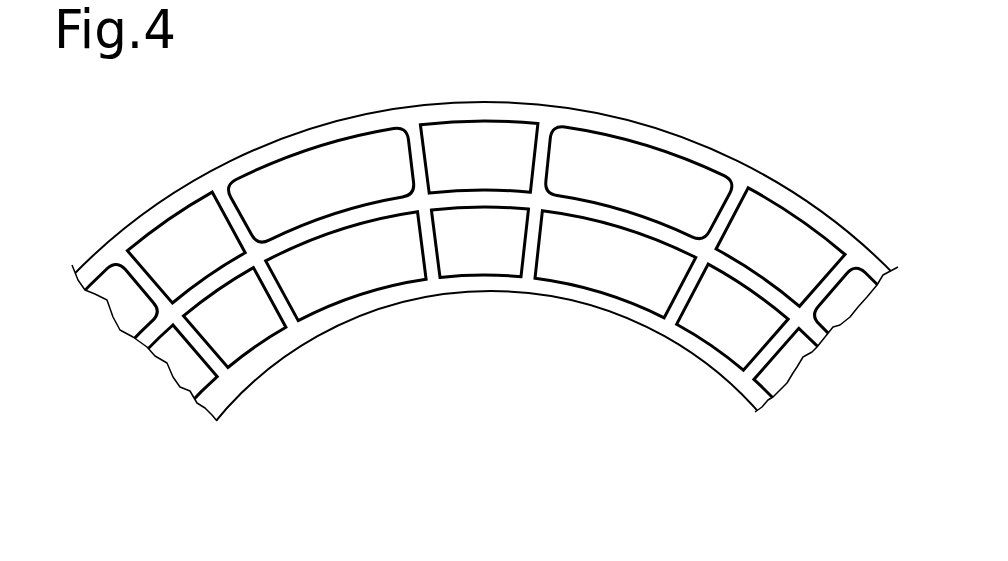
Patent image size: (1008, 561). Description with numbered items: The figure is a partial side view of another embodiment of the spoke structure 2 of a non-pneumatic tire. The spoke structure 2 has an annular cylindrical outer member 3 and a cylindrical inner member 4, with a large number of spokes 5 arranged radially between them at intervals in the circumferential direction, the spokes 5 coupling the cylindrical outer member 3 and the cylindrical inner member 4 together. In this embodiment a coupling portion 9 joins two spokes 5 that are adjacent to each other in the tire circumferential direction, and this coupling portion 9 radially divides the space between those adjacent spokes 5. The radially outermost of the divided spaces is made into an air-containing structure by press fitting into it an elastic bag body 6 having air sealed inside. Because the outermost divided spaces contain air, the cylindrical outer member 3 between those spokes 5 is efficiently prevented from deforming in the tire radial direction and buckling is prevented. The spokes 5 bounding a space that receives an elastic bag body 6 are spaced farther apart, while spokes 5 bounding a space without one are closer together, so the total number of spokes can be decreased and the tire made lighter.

The spoke structure 2 is at (816, 205).
The cylindrical outer member 3 is at (700, 157).
The cylindrical inner member 4 is at (640, 315).
The spoke 5 is at (540, 152).
The elastic bag body 6 is at (348, 152).
The coupling portion 9 is at (606, 216).